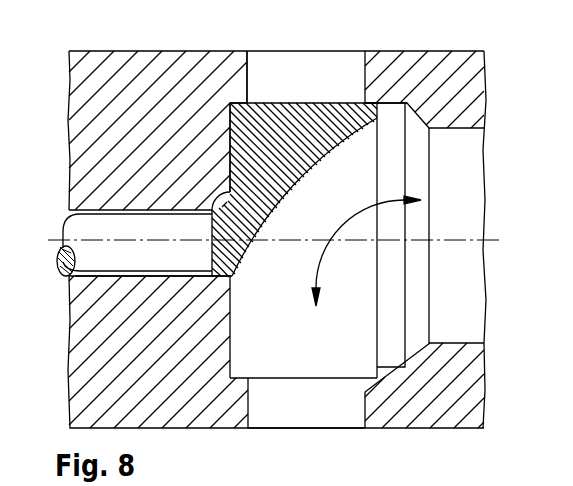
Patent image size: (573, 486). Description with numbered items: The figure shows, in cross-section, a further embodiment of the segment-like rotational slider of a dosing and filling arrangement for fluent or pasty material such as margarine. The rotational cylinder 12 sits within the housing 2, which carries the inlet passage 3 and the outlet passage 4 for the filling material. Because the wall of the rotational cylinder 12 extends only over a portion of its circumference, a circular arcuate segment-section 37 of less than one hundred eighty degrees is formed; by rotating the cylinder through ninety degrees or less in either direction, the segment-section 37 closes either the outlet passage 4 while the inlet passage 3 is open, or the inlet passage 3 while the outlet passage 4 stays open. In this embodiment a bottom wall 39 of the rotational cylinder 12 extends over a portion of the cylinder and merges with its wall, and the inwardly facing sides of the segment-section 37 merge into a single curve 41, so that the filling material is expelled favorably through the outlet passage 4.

The housing 2 is at (455, 62).
The inlet passage 3 is at (352, 57).
The outlet passage 4 is at (318, 412).
The rotational cylinder 12 is at (275, 98).
The segment-section 37 is at (326, 102).
The bottom wall 39 is at (231, 111).
The single curve 41 is at (320, 157).